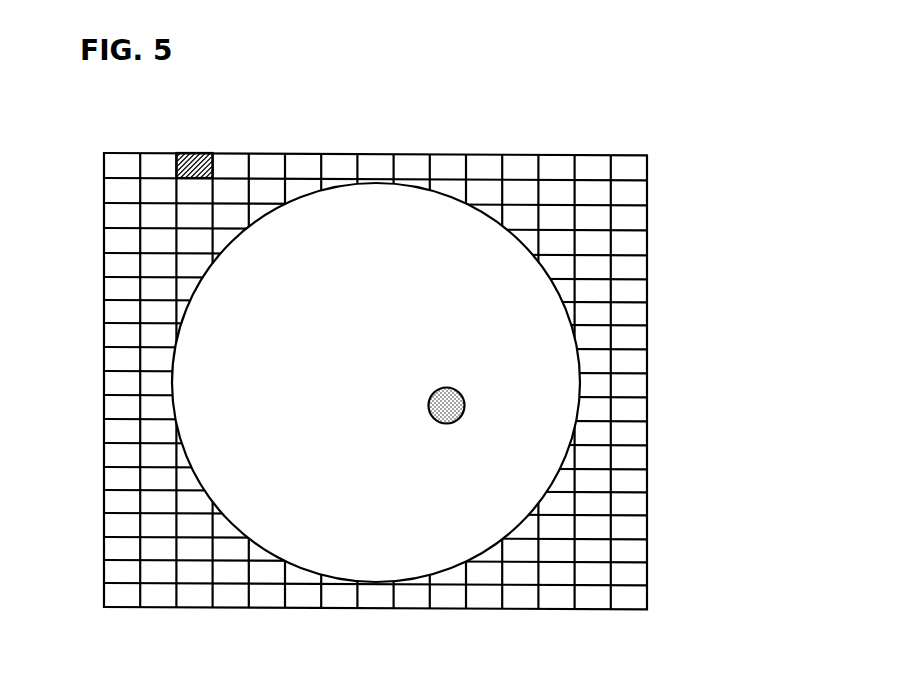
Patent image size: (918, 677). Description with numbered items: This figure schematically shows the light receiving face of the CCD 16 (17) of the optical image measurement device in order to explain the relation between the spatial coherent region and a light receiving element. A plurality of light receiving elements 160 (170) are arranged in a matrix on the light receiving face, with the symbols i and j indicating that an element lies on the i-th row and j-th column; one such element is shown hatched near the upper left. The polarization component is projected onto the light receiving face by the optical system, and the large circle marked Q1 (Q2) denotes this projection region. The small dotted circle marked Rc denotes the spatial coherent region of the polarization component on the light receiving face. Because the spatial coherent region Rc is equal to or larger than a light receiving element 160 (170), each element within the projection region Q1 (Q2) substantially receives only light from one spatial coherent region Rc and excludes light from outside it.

The light receiving element 160 is at (250, 136).
The light receiving element 170 is at (202, 153).
The CCD 16 is at (443, 381).
The CCD 17 is at (647, 172).
The projection region Q1 is at (376, 350).
The projection region Q2 is at (378, 193).
The spatial coherent region Rc is at (450, 393).